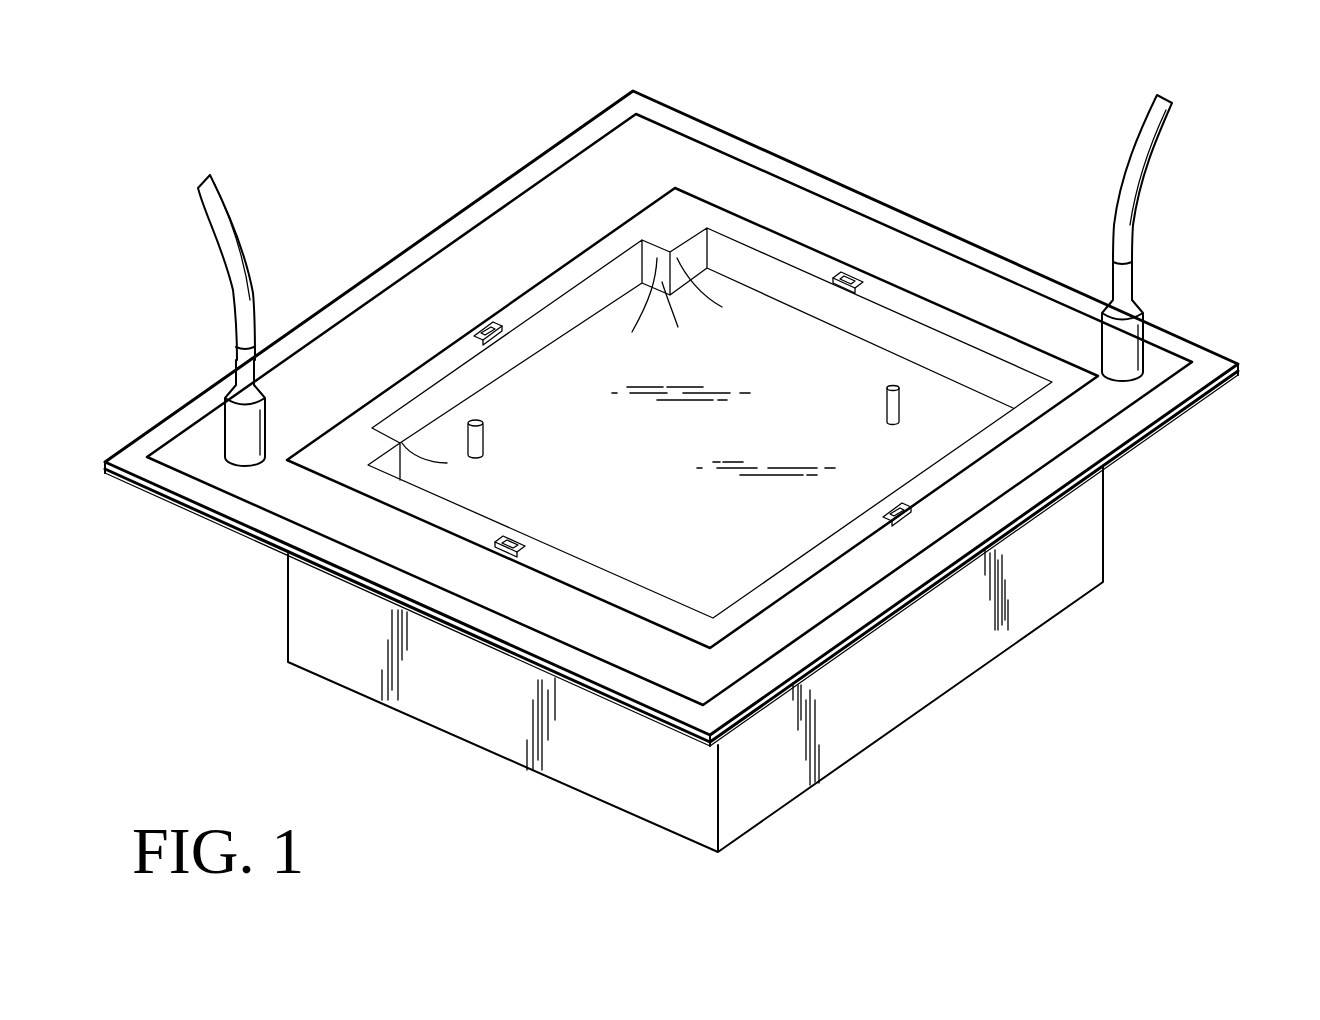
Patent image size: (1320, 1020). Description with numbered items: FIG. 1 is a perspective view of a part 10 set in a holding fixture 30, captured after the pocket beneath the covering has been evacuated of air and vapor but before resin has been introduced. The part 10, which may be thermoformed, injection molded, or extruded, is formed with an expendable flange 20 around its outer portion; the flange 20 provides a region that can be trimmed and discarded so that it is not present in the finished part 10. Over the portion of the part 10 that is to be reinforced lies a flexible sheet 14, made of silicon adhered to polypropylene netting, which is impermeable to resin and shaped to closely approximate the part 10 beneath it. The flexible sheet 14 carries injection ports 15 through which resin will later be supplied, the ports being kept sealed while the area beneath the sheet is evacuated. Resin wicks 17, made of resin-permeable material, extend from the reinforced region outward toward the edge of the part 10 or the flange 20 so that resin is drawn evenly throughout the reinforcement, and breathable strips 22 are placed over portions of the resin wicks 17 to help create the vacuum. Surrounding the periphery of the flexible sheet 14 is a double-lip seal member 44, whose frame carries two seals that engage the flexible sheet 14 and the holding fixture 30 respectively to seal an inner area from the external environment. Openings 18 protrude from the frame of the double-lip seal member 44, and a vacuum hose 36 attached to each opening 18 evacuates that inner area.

The part 10 is at (1197, 407).
The flexible sheet 14 is at (948, 408).
The injection port 15 is at (485, 440).
The resin wick 17 is at (473, 343).
The opening 18 is at (238, 462).
The flange 20 is at (1143, 443).
The breathable strip 22 is at (500, 320).
The holding fixture 30 is at (905, 675).
The vacuum hose 36 is at (227, 243).
The double-lip seal member 44 is at (653, 157).